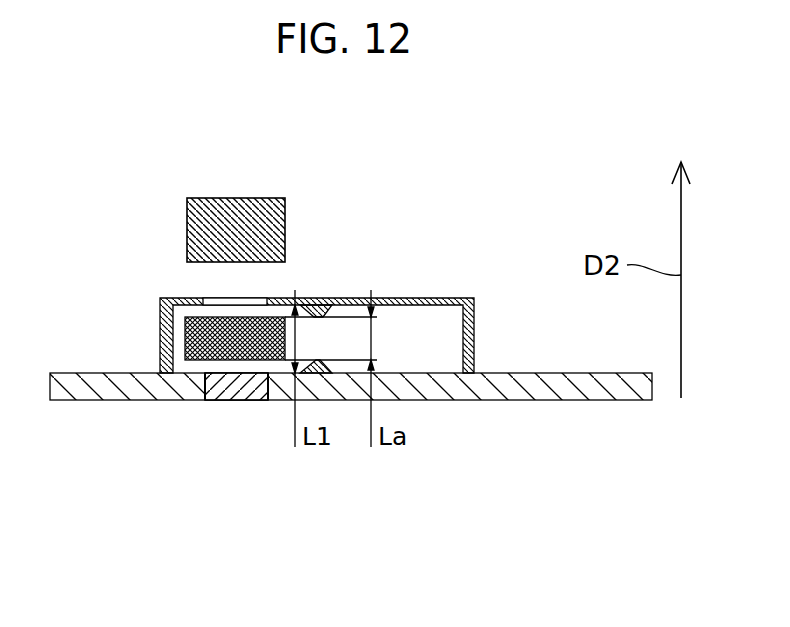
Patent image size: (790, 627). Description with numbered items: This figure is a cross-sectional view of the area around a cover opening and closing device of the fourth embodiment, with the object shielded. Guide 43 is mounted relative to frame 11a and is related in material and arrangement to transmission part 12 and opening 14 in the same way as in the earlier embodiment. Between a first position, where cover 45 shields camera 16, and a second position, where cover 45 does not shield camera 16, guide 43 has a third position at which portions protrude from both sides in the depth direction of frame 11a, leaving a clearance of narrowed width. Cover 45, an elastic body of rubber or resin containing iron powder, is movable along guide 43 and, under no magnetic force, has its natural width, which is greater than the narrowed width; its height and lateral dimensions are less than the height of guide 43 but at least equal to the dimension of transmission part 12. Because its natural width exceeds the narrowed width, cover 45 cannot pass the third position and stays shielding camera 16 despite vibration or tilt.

The frame 11a is at (570, 402).
The transmission part 12 is at (223, 400).
The opening 14 is at (213, 300).
The camera 16 is at (285, 232).
The guide 43 is at (477, 315).
The cover 45 is at (185, 340).